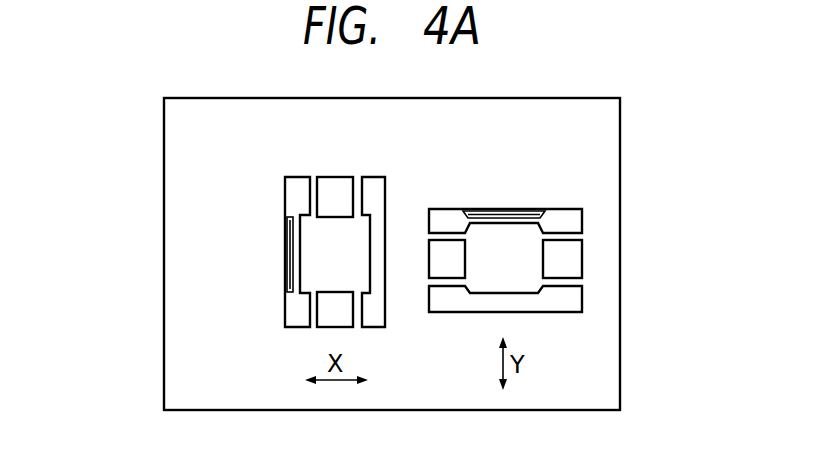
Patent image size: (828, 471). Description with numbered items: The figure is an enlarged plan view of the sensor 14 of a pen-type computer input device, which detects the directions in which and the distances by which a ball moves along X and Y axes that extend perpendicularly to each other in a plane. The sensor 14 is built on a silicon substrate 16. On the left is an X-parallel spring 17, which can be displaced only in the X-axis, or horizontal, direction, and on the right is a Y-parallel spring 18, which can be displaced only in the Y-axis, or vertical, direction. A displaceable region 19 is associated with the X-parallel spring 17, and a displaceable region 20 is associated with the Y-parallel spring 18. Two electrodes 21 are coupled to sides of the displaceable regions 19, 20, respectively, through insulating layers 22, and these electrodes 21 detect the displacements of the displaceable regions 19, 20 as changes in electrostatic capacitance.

The sensor 14 is at (163, 313).
The silicon substrate 16 is at (602, 367).
The X-parallel spring 17 is at (331, 218).
The Y-parallel spring 18 is at (547, 250).
The displaceable region 19 is at (330, 230).
The displaceable region 20 is at (527, 266).
The electrode 21 is at (290, 213).
The insulating layer 22 is at (287, 277).